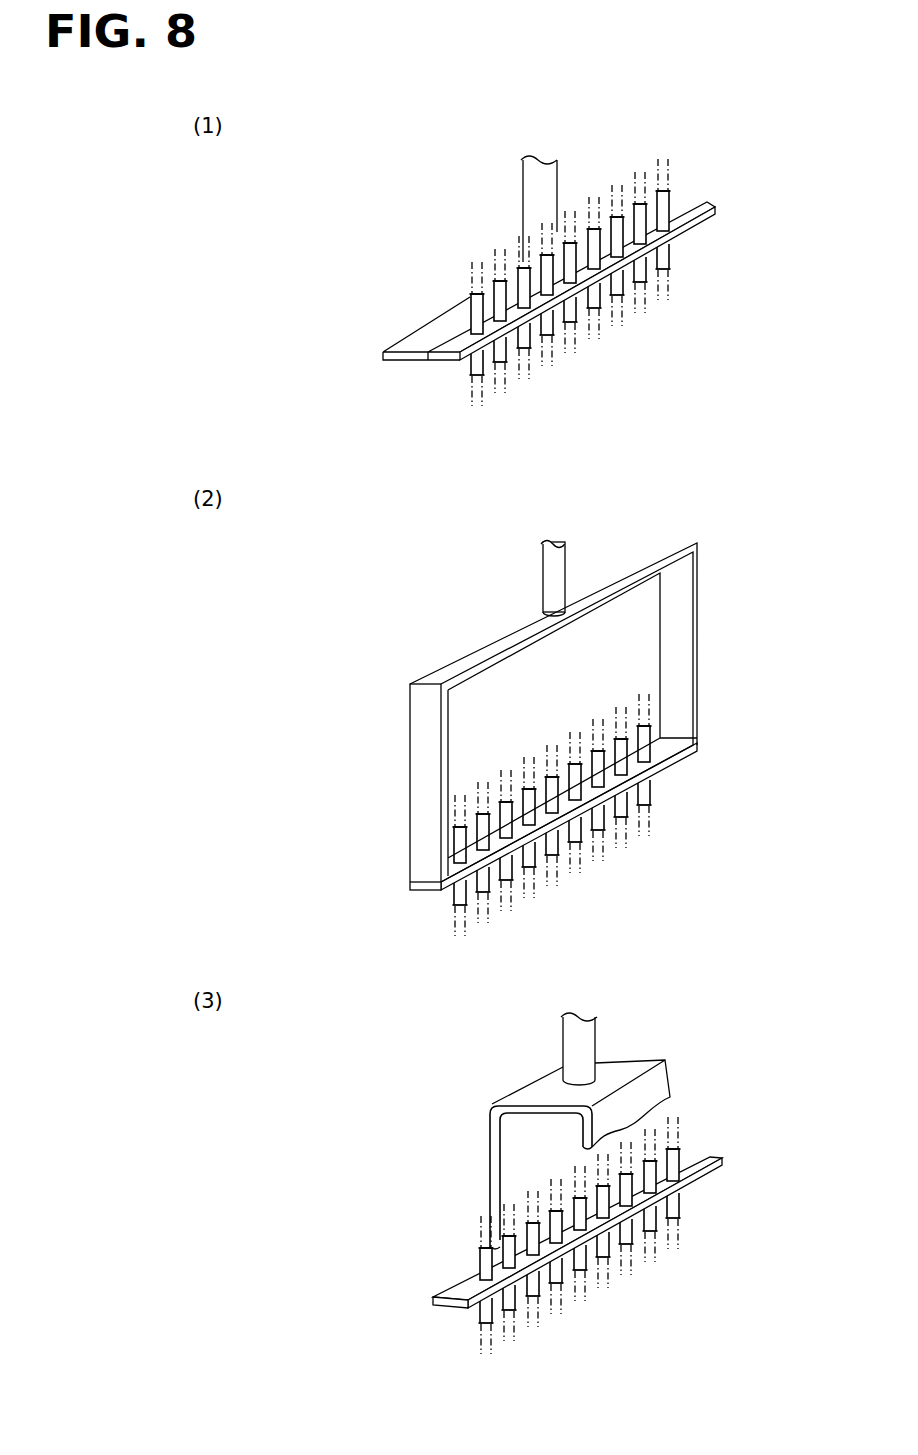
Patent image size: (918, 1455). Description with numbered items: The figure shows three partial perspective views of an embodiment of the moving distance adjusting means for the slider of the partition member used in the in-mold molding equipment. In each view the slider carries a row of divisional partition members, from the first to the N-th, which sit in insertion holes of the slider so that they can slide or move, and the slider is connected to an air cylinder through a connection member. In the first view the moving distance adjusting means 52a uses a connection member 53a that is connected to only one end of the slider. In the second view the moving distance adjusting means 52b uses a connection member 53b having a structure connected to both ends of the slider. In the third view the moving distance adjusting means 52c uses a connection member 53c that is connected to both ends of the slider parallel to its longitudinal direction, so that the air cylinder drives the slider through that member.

The moving distance adjusting means 52a is at (481, 215).
The connection member 53a is at (382, 358).
The moving distance adjusting means 52b is at (512, 595).
The connection member 53b is at (667, 548).
The moving distance adjusting means 52c is at (524, 1068).
The connection member 53c is at (647, 1060).